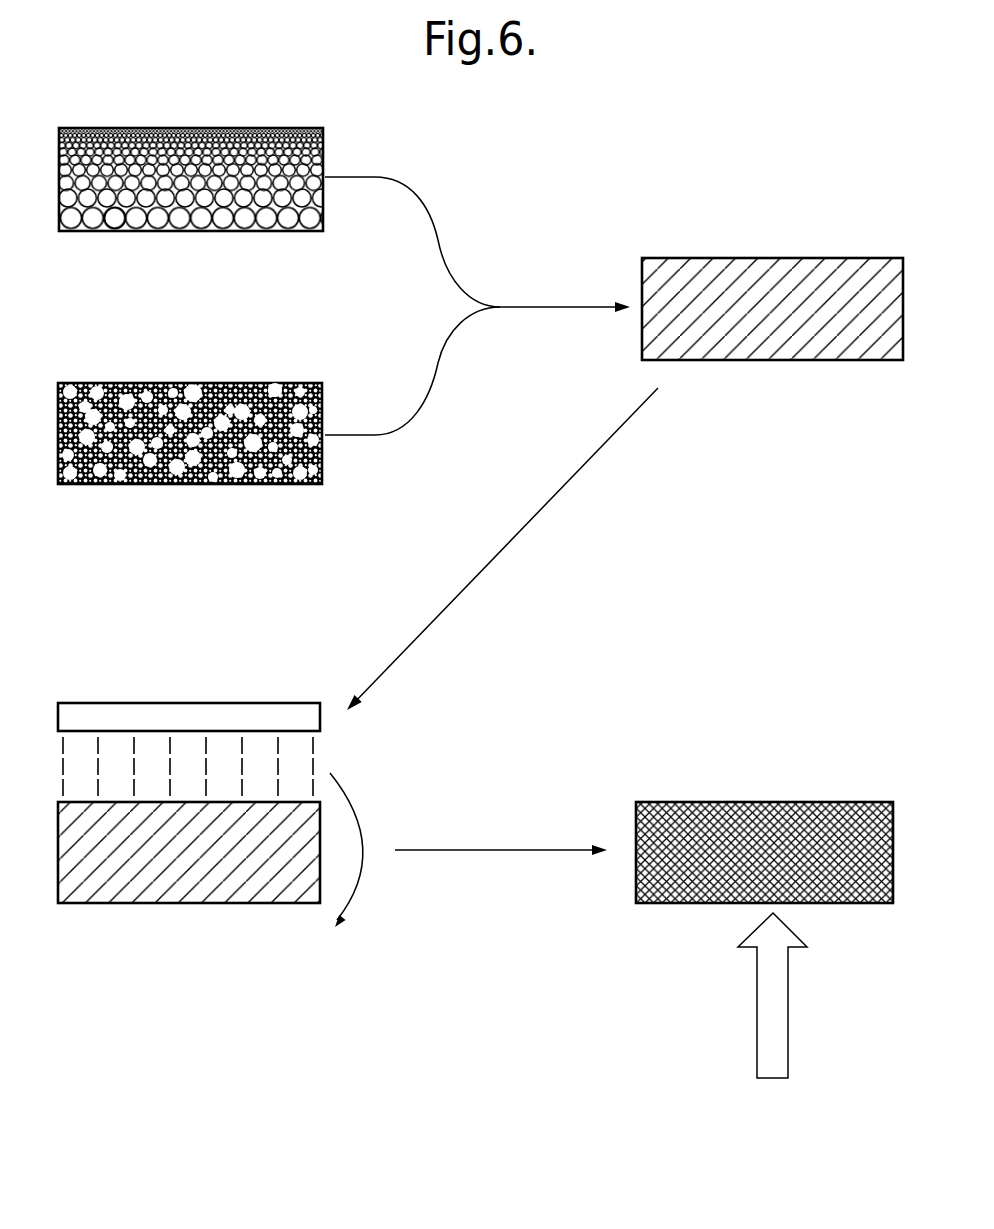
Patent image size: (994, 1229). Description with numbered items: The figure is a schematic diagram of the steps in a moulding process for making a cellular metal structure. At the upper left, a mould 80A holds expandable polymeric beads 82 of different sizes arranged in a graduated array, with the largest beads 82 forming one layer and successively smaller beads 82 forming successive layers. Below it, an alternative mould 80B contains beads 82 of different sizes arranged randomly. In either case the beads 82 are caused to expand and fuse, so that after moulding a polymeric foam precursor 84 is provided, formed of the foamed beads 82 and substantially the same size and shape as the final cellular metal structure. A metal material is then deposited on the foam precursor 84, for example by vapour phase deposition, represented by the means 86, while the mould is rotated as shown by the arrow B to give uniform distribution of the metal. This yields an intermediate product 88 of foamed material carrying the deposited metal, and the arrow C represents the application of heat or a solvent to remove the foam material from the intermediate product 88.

The mould 80A is at (336, 145).
The mould 80B is at (132, 497).
The expandable polymeric beads 82 is at (123, 127).
The polymeric foam precursor 84 is at (685, 248).
The deposition means 86 is at (118, 713).
The intermediate product 88 is at (679, 790).
The rotation arrow B is at (357, 887).
The heat or solvent application arrow C is at (782, 1015).